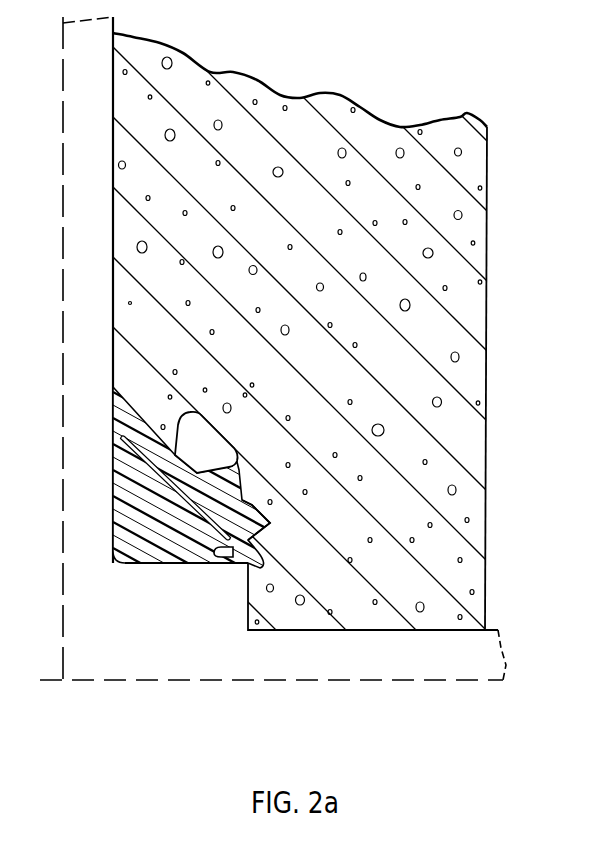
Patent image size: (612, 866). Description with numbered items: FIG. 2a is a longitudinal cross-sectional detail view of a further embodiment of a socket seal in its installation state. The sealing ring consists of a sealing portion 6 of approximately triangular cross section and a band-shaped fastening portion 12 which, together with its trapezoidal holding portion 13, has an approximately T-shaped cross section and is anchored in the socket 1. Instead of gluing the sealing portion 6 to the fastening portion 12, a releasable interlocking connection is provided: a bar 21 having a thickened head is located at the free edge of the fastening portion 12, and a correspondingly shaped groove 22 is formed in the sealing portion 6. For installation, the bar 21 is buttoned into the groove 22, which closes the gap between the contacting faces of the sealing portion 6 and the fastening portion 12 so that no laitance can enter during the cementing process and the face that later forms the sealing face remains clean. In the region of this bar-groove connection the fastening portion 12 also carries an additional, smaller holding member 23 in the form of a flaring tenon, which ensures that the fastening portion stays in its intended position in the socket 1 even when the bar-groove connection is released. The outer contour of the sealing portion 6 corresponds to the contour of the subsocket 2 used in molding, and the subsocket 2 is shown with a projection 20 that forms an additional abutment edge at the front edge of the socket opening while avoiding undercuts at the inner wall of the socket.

The socket 1 is at (465, 385).
The subsocket 2 is at (462, 662).
The sealing portion 6 is at (113, 535).
The fastening portion 12 is at (215, 498).
The holding portion 13 is at (217, 448).
The projection 20 is at (193, 603).
The bar 21 is at (257, 545).
The groove 22 is at (193, 562).
The holding member 23 is at (268, 518).